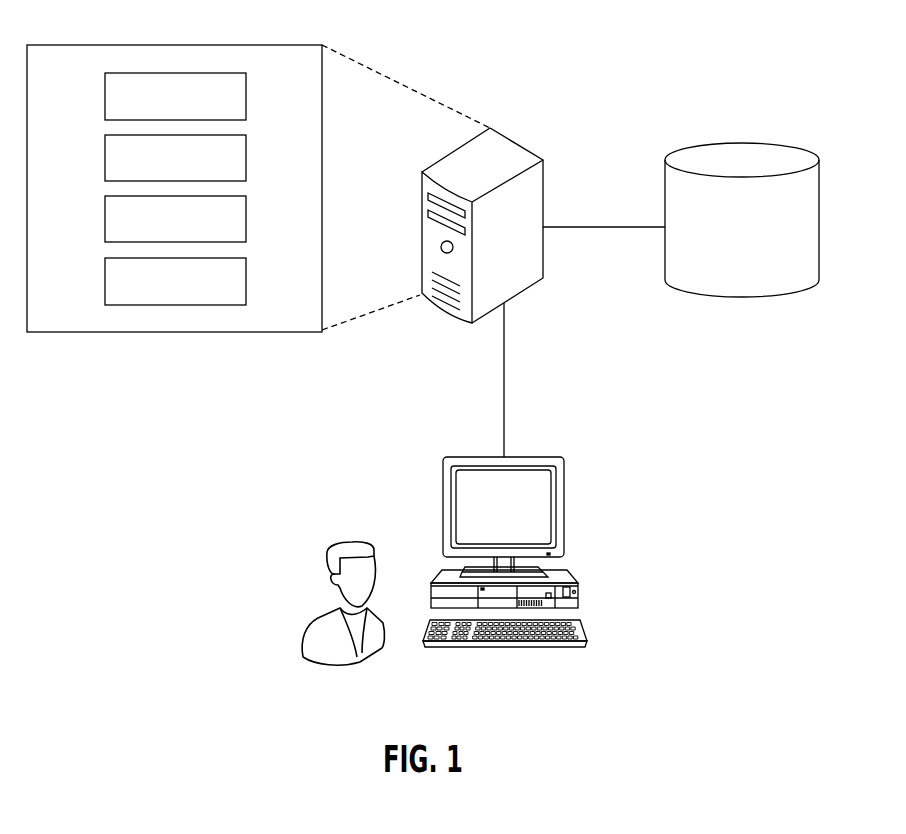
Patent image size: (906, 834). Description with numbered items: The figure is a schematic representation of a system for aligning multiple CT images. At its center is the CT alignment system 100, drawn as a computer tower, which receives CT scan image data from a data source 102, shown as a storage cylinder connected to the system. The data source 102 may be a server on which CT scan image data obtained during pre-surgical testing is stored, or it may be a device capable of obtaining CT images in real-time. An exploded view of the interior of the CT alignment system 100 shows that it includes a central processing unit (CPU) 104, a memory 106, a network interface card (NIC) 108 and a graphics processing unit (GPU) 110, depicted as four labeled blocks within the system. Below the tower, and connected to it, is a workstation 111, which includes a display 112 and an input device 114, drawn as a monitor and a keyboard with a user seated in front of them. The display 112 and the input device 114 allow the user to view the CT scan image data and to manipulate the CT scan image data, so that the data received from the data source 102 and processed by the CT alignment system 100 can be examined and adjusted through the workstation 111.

The CT alignment system 100 is at (522, 118).
The data source 102 is at (733, 142).
The central processing unit (CPU) 104 is at (105, 97).
The memory 106 is at (105, 158).
The network interface card (NIC) 108 is at (105, 219).
The graphics processing unit (GPU) 110 is at (105, 281).
The workstation 111 is at (615, 520).
The display 112 is at (532, 453).
The input device 114 is at (584, 628).